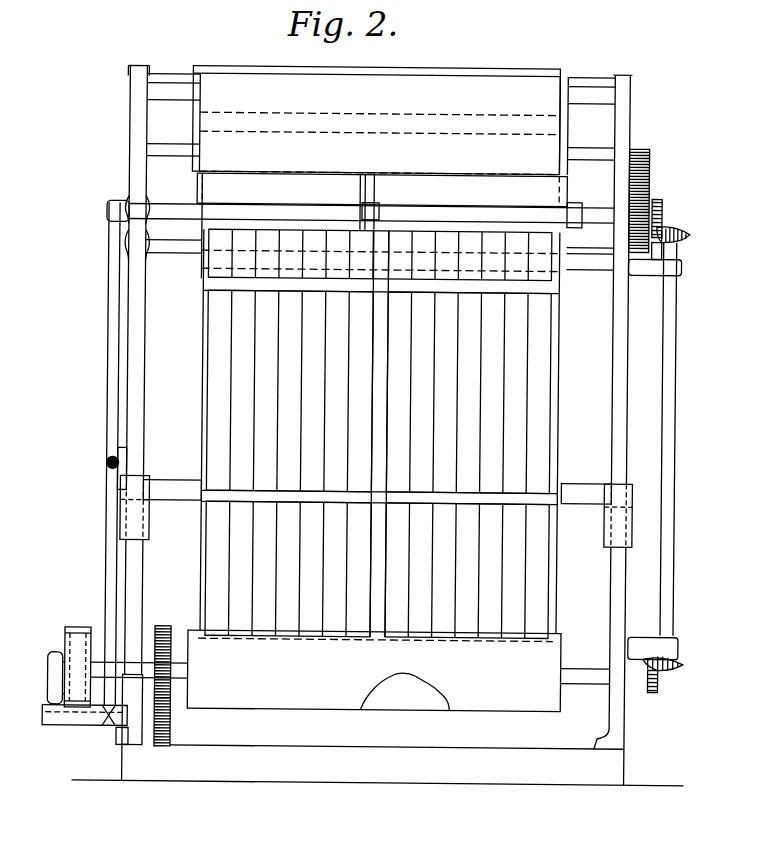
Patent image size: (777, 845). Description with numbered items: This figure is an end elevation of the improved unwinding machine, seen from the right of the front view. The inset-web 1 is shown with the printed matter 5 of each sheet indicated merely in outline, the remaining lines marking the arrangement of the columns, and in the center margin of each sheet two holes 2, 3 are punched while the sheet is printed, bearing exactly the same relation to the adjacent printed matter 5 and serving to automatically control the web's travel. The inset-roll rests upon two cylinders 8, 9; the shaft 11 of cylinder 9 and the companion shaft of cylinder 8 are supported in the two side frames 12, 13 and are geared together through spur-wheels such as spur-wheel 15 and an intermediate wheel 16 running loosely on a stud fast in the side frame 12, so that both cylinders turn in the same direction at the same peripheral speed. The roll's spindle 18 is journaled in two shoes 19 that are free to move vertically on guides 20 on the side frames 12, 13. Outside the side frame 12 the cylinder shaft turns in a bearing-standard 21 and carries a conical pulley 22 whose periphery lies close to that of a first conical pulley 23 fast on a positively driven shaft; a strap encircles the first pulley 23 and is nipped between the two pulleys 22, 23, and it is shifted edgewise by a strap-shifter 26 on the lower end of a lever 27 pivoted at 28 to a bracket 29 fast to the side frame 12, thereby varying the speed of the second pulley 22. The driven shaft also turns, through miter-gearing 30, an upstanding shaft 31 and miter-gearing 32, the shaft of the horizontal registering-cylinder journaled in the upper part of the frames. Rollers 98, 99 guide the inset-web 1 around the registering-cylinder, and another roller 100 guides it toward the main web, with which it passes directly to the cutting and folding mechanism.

The inset-web 1 is at (372, 298).
The hole 2 is at (378, 342).
The hole 3 is at (378, 237).
The printed matter 5 is at (378, 464).
The cylinder 8 is at (404, 692).
The cylinder 9 is at (374, 671).
The shaft 11 is at (178, 672).
The side frame 12 is at (146, 430).
The side frame 13 is at (614, 440).
The spur-wheel 15 is at (165, 632).
The intermediate wheel 16 is at (175, 728).
The spindle 18 is at (150, 494).
The shoe 19 is at (140, 533).
The guide 20 is at (136, 585).
The bearing-standard 21 is at (135, 748).
The conical pulley 22 is at (70, 630).
The conical pulley 23 is at (83, 631).
The strap-shifter 26 is at (83, 728).
The lever 27 is at (113, 566).
The pivot 28 is at (107, 463).
The bracket 29 is at (118, 478).
The miter-gearing 30 is at (656, 655).
The upstanding shaft 31 is at (668, 413).
The miter-gearing 32 is at (660, 226).
The roller 98 is at (565, 275).
The roller 99 is at (400, 200).
The roller 100 is at (562, 110).